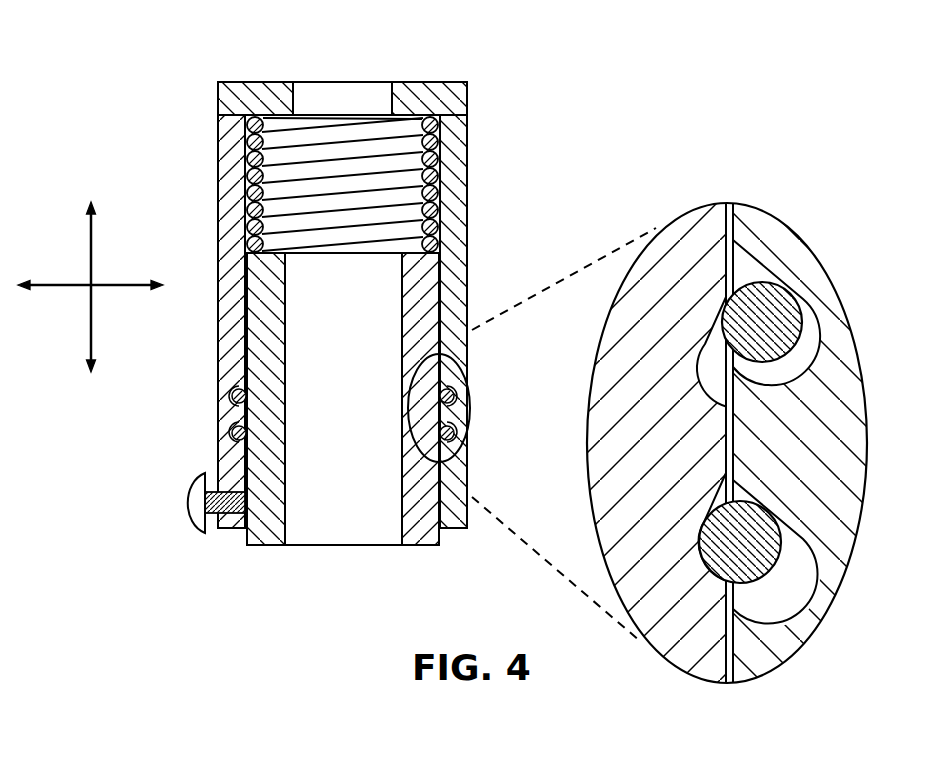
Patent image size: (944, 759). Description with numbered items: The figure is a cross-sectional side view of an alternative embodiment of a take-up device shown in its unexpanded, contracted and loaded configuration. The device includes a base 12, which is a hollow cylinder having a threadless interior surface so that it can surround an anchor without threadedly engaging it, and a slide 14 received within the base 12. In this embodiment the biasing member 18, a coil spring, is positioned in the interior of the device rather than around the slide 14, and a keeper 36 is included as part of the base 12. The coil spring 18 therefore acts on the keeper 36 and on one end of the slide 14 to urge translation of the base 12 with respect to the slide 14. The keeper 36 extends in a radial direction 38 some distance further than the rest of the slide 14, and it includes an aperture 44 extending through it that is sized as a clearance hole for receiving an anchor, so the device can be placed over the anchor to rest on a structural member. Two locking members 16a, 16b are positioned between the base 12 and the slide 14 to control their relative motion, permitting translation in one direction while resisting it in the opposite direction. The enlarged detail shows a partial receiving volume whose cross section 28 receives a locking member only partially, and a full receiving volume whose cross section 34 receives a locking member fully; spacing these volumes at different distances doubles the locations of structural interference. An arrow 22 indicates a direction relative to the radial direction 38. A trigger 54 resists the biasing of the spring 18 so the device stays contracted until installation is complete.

The base 12 is at (460, 164).
The slide 14 is at (402, 512).
The locking member 16a is at (773, 312).
The locking member 16b is at (763, 555).
The biasing member 18 is at (343, 135).
The axial direction arrow 22 is at (95, 245).
The cross section 28 is at (693, 527).
The cross section 34 is at (820, 358).
The keeper 36 is at (462, 93).
The radial direction 38 is at (120, 287).
The aperture 44 is at (400, 92).
The trigger 54 is at (193, 528).